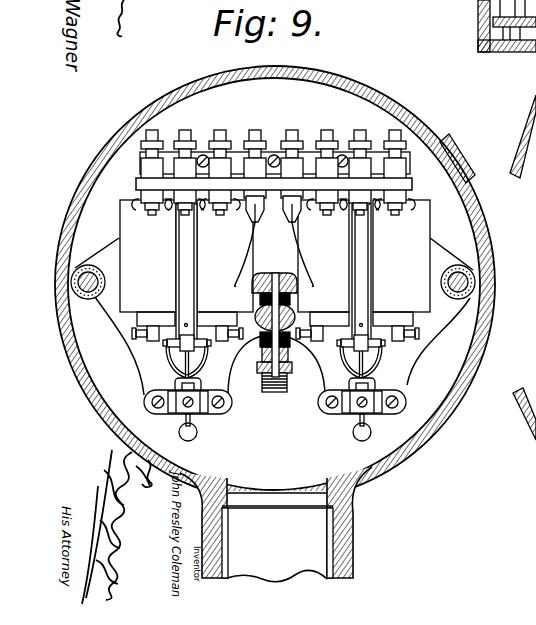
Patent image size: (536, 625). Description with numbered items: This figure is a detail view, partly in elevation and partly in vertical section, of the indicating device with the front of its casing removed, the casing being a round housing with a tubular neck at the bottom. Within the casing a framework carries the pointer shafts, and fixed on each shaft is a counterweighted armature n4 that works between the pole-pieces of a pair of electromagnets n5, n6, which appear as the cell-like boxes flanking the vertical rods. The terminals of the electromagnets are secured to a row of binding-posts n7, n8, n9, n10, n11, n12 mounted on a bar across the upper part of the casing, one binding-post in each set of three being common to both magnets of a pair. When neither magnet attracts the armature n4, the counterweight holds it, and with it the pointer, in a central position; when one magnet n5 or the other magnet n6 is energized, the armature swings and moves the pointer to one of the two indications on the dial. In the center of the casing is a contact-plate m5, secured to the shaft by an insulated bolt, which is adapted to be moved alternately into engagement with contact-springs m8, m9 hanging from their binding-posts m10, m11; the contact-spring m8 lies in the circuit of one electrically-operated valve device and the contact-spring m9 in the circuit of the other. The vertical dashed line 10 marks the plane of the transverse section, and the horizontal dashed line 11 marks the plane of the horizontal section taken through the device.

The section line 10 10 is at (273, 612).
The section line 11 11 is at (512, 280).
The counterweighted armature n4 is at (178, 306).
The electromagnet n5 is at (172, 257).
The electromagnet n6 is at (313, 270).
The binding-post n7 is at (141, 173).
The binding-post n8 is at (184, 139).
The binding-post n9 is at (218, 136).
The binding-post n10 is at (328, 137).
The binding-post n11 is at (362, 137).
The binding-post n12 is at (403, 135).
The contact-plate m5 is at (272, 276).
The contact-spring m8 is at (255, 236).
The contact-spring m9 is at (296, 240).
The binding-post m10 is at (253, 137).
The binding-post m11 is at (303, 124).